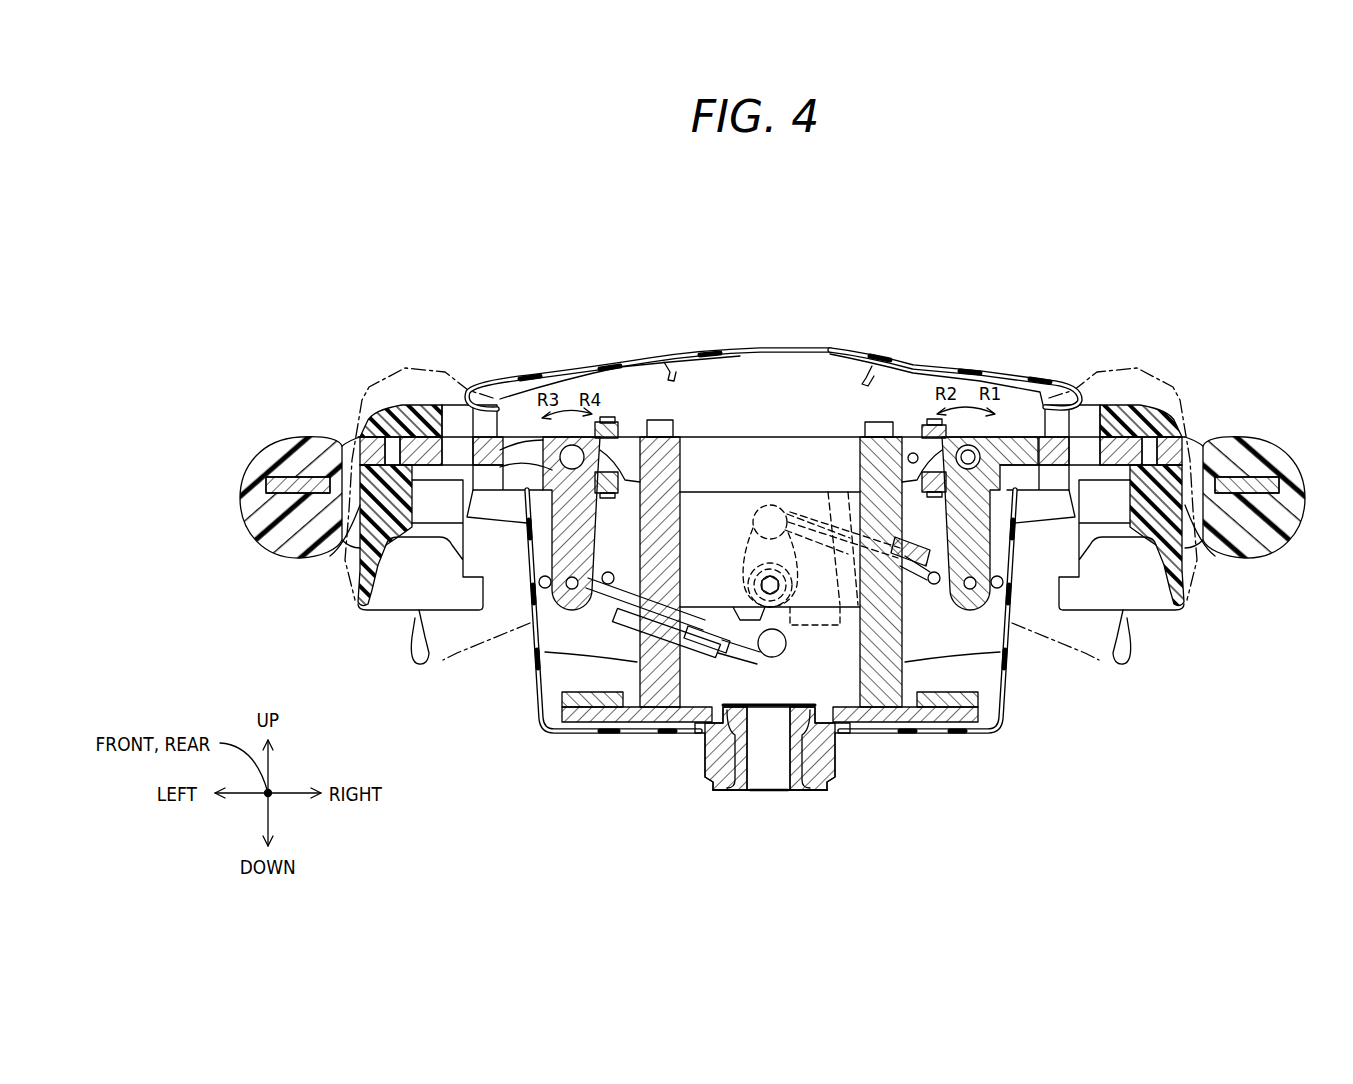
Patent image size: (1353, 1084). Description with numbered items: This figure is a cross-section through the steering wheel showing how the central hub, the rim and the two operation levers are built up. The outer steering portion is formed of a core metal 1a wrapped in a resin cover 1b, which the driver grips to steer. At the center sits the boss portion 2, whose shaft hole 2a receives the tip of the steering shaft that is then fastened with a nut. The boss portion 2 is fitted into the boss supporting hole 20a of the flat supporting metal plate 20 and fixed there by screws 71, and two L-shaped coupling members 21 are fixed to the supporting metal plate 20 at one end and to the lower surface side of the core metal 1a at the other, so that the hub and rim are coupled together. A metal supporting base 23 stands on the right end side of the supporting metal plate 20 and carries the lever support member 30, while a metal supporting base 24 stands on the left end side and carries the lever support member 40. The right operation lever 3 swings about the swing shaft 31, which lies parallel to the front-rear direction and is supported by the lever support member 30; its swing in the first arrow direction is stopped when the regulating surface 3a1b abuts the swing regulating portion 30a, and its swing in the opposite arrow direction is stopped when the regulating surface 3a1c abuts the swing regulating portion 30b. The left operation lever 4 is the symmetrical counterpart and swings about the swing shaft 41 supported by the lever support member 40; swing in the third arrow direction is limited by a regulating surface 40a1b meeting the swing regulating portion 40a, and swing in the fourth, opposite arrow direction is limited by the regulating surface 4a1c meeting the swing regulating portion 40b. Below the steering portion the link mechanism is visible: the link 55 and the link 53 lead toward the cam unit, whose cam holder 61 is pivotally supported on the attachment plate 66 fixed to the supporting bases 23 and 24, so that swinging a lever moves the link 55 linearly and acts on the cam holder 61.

The core metal 1a is at (285, 483).
The resin cover 1b is at (250, 473).
The boss portion 2 is at (737, 792).
The shaft hole 2a is at (763, 792).
The operation lever 3 is at (1113, 370).
The regulating surface 3a1b is at (934, 424).
The regulating surface 3a1c is at (910, 453).
The operation lever 4 is at (371, 418).
The regulating surface 4a1c is at (667, 365).
The supporting metal plate 20 is at (700, 700).
The boss supporting hole 20a is at (787, 762).
The coupling member 21 is at (562, 680).
The supporting base 23 is at (905, 662).
The supporting base 24 is at (640, 675).
The lever support member 30 is at (858, 445).
The swing regulating portion 30a is at (900, 437).
The swing regulating portion 30b is at (865, 437).
The swing shaft 31 is at (1005, 425).
The lever support member 40 is at (675, 437).
The swing regulating portion 40a is at (640, 437).
The left fastening nut 40a1b is at (610, 422).
The swing regulating portion 40b is at (650, 437).
The swing shaft 41 is at (540, 432).
The link 53 is at (887, 727).
The link 55 is at (627, 627).
The cam holder 61 is at (875, 650).
The attachment plate 66 is at (782, 505).
The screws 71 is at (702, 762).